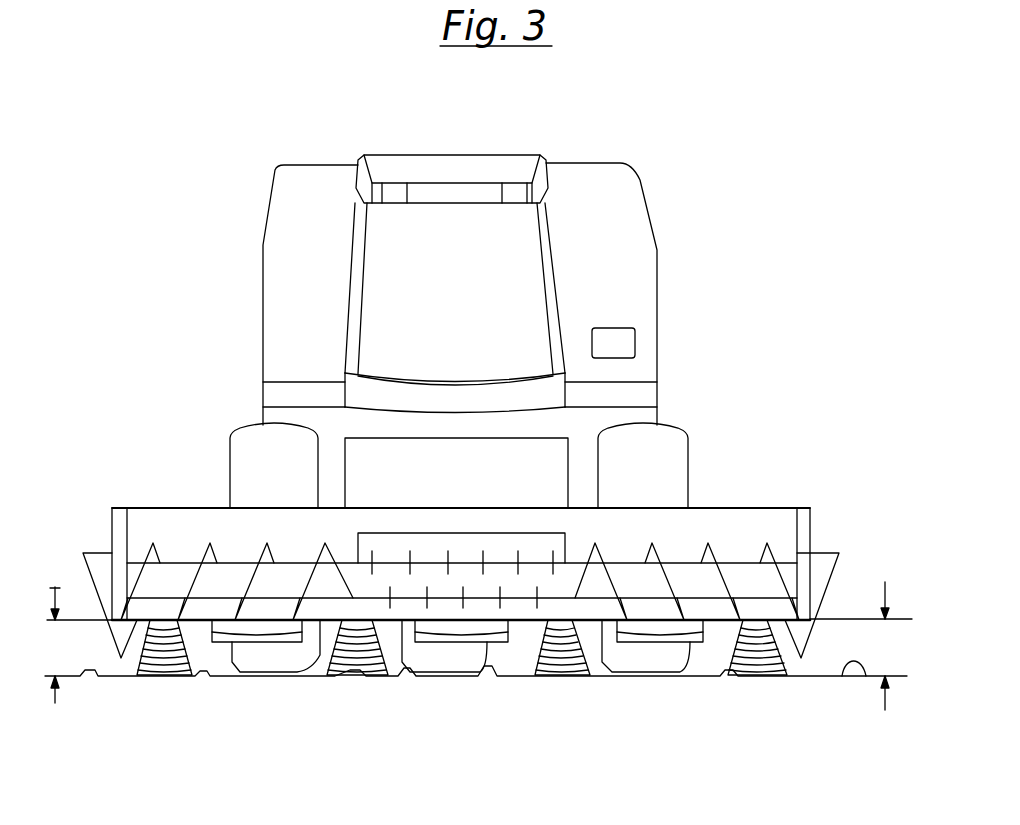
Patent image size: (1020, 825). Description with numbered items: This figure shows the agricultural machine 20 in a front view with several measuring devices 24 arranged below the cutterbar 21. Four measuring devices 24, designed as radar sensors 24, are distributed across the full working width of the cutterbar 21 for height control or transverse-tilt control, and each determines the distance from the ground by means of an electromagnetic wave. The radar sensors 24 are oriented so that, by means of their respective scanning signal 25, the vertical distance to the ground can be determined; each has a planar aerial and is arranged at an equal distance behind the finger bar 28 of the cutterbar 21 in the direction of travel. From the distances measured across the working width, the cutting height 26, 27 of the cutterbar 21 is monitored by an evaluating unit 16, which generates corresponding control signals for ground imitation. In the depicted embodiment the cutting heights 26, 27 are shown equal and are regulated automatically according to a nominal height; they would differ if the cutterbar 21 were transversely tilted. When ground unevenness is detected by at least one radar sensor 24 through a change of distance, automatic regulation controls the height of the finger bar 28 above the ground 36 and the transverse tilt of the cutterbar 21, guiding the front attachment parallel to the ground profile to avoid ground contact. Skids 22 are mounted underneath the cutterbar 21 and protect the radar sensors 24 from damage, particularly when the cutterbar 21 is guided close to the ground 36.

The agricultural machine 20 is at (292, 160).
The evaluating unit 16 is at (624, 343).
The cutterbar 21 is at (745, 513).
The skids 22 is at (262, 632).
The measuring devices (radar sensors) 24 is at (165, 627).
The scanning signal 25 is at (168, 627).
The cutting height 26 is at (861, 646).
The cutting height 27 is at (77, 645).
The finger bar 28 is at (405, 678).
The ground 36 is at (866, 676).